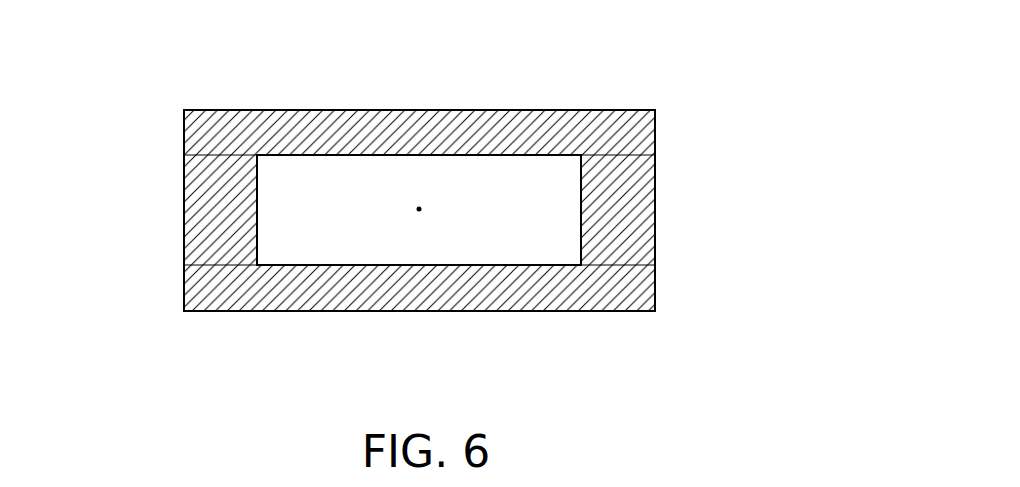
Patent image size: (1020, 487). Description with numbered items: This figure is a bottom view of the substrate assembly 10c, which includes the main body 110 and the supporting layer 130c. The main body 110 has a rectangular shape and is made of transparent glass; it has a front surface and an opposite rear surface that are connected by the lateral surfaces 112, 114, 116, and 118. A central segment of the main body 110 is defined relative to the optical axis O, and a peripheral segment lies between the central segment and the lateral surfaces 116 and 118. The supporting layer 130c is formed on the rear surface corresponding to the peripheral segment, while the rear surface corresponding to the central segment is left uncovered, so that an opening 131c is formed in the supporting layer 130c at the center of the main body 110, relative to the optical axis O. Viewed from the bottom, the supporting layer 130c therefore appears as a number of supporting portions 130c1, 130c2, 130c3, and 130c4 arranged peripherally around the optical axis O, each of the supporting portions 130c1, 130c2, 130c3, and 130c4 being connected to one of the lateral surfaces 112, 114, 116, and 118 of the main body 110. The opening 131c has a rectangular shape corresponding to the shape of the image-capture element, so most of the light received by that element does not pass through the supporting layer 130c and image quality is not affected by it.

The substrate assembly 10c is at (684, 78).
The main body 110 is at (448, 180).
The lateral surface 112 is at (340, 110).
The lateral surface 114 is at (345, 311).
The lateral surface 116 is at (187, 239).
The lateral surface 118 is at (655, 238).
The supporting layer 130c is at (614, 120).
The supporting portion 130c1 is at (655, 130).
The supporting portion 130c2 is at (193, 192).
The supporting portion 130c3 is at (655, 290).
The supporting portion 130c4 is at (655, 188).
The opening 131c is at (490, 235).
The optical axis O is at (419, 212).